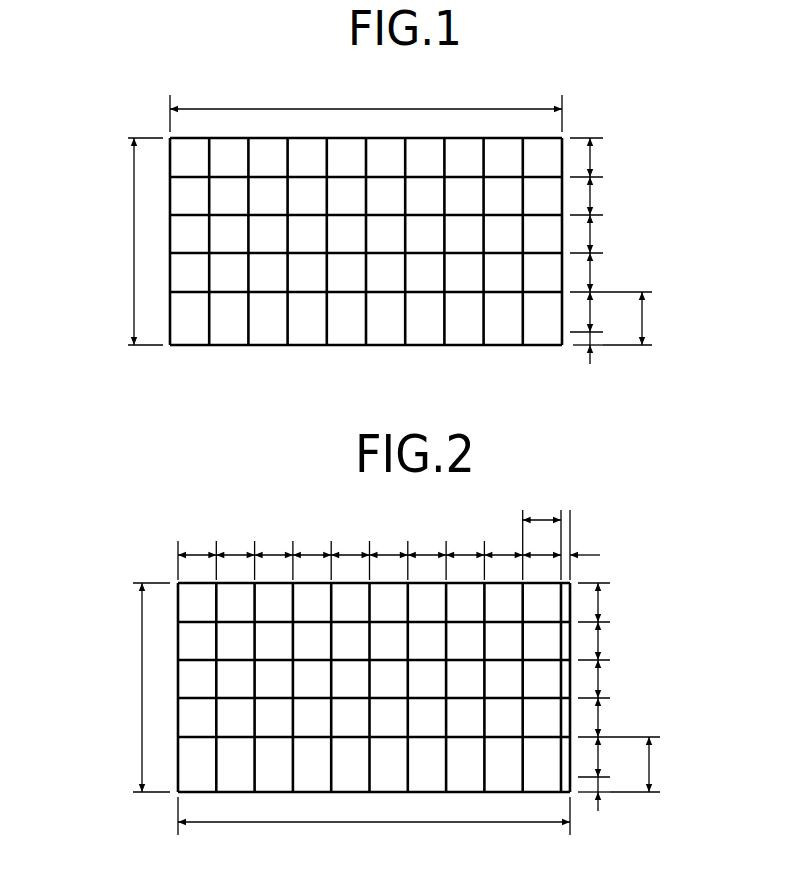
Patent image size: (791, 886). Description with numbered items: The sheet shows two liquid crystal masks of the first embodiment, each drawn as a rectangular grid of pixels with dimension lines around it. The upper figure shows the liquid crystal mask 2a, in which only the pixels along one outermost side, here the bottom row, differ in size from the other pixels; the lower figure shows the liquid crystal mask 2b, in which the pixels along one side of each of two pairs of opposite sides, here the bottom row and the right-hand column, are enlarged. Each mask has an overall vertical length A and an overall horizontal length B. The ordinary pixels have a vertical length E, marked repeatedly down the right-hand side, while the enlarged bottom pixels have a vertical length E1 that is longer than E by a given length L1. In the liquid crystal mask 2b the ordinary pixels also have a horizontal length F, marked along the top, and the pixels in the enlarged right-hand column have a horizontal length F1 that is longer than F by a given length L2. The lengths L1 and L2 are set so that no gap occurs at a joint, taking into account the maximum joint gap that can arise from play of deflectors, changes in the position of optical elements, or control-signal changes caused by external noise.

In FIG. 1, the liquid crystal mask 2a is at (110, 237).
In FIG. 2, the liquid crystal mask 2b is at (118, 677).
In FIG. 1, the vertical length A is at (138, 241).
In FIG. 2, the vertical length A is at (144, 687).
In FIG. 1, the horizontal length B is at (366, 108).
In FIG. 2, the horizontal length B is at (374, 826).
In FIG. 1, the vertical length of the other pixels E is at (593, 235).
In FIG. 2, the vertical length of the other pixels E is at (601, 680).
In FIG. 1, the vertical length of the larger pixels E1 is at (638, 318).
In FIG. 2, the vertical length of the larger pixels E1 is at (645, 764).
In FIG. 2, the horizontal length of the other pixels F is at (369, 553).
In FIG. 2, the horizontal length of the larger pixels F1 is at (542, 514).
In FIG. 1, the given length L1 is at (593, 334).
In FIG. 2, the given length L1 is at (600, 779).
In FIG. 2, the given length L2 is at (566, 551).